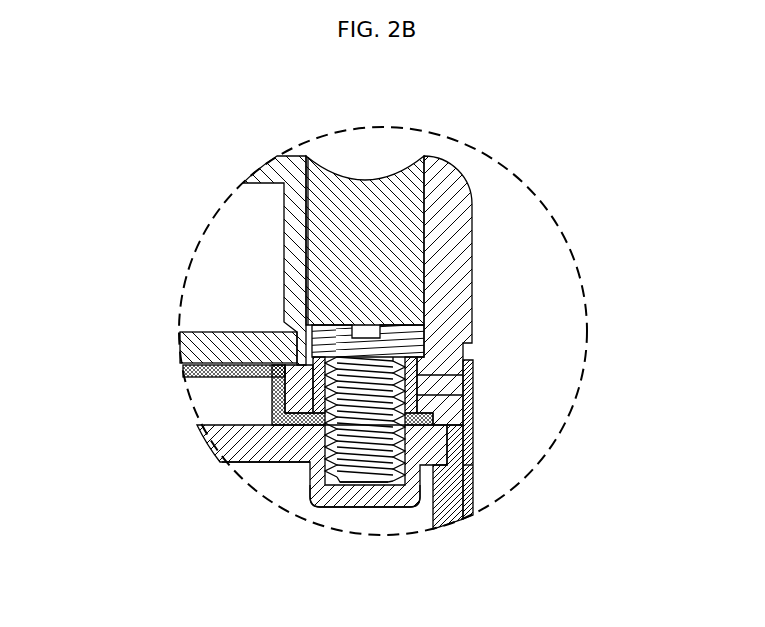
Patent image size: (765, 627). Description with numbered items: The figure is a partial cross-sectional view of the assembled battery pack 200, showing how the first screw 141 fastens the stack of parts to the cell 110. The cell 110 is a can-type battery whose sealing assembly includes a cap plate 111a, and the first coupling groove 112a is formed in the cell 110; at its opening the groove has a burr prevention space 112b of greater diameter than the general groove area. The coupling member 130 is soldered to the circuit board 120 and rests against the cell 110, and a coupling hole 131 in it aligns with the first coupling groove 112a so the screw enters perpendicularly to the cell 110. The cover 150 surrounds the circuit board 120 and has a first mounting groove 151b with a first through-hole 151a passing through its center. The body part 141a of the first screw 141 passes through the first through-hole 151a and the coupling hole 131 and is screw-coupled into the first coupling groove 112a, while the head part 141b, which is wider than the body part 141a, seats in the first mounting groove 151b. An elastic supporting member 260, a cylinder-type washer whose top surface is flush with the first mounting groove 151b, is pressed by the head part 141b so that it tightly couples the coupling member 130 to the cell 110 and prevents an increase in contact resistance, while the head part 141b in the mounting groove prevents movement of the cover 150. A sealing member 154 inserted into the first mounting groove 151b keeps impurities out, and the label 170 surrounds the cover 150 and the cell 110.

The battery pack 200 is at (471, 139).
The sealing member 154 is at (455, 195).
The cover 150 is at (466, 190).
The first through-hole 151a is at (273, 388).
The first mounting groove 151b is at (300, 308).
The circuit board 120 is at (210, 346).
The first screw 141 is at (520, 360).
The body part 141a is at (463, 376).
The head part 141b is at (424, 325).
The elastic supporting member 260 is at (473, 393).
The label 170 is at (473, 445).
The burr prevention space 112b is at (475, 465).
The cell 110 is at (478, 499).
The coupling member 130 is at (270, 396).
The coupling hole 131 is at (272, 460).
The cap plate 111a is at (347, 497).
The first coupling groove 112a is at (382, 482).